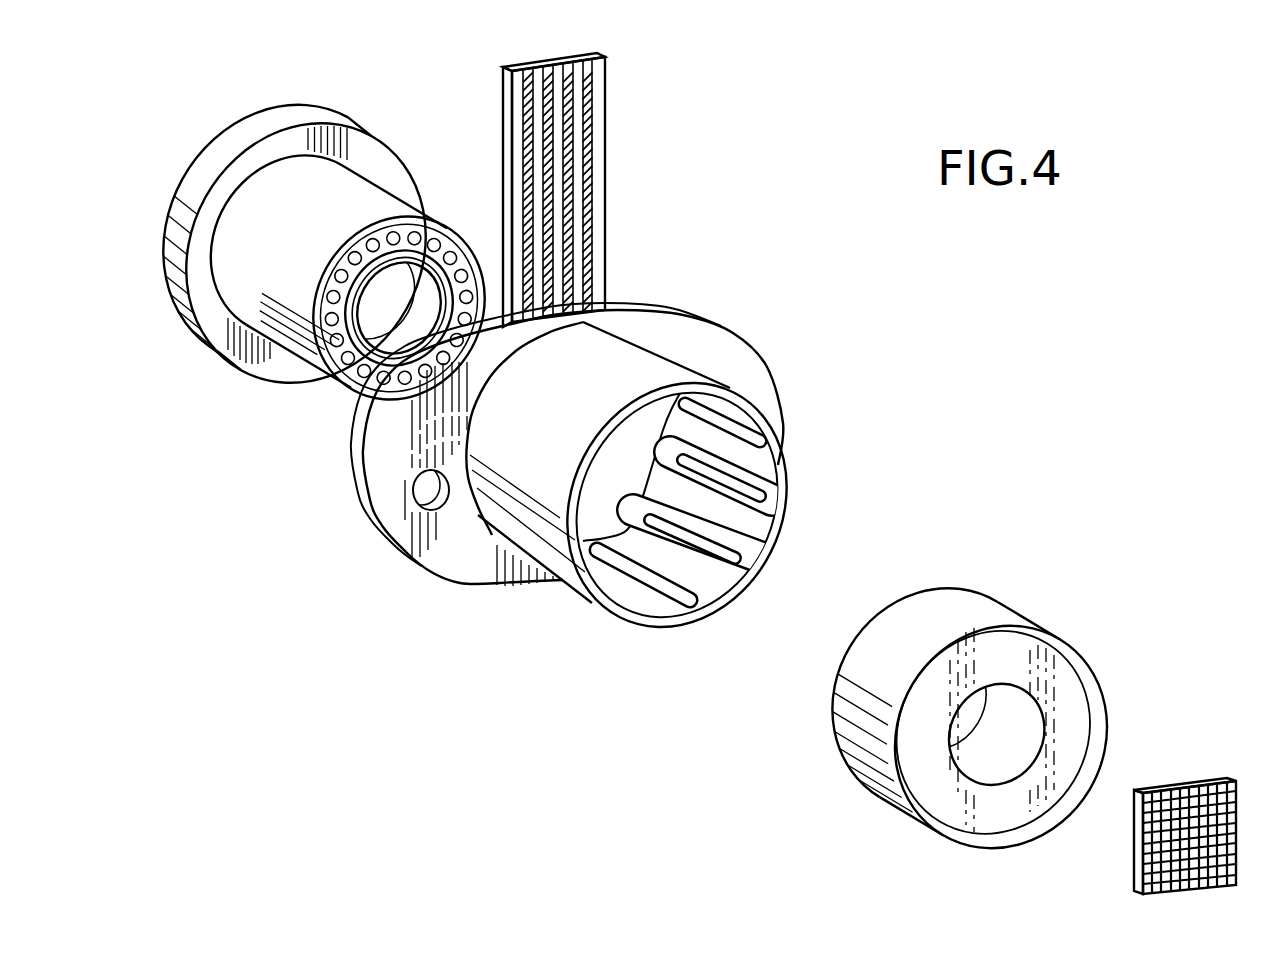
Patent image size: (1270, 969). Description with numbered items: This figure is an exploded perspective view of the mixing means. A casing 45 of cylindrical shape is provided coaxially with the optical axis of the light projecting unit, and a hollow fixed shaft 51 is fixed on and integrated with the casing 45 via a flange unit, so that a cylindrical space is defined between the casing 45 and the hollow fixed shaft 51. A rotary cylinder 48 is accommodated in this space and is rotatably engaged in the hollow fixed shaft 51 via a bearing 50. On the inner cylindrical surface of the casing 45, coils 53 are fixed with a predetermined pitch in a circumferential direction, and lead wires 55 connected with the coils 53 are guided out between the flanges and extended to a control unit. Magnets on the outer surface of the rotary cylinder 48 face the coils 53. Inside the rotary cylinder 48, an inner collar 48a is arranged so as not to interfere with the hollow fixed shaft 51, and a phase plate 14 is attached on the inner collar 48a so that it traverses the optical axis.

The phase plate 14 is at (1218, 782).
The casing 45 is at (643, 362).
The rotary cylinder 48 is at (939, 736).
The inner collar 48a is at (990, 813).
The bearing 50 is at (297, 313).
The hollow fixed shaft 51 is at (243, 297).
The coils 53 is at (763, 517).
The lead wires 55 is at (605, 115).